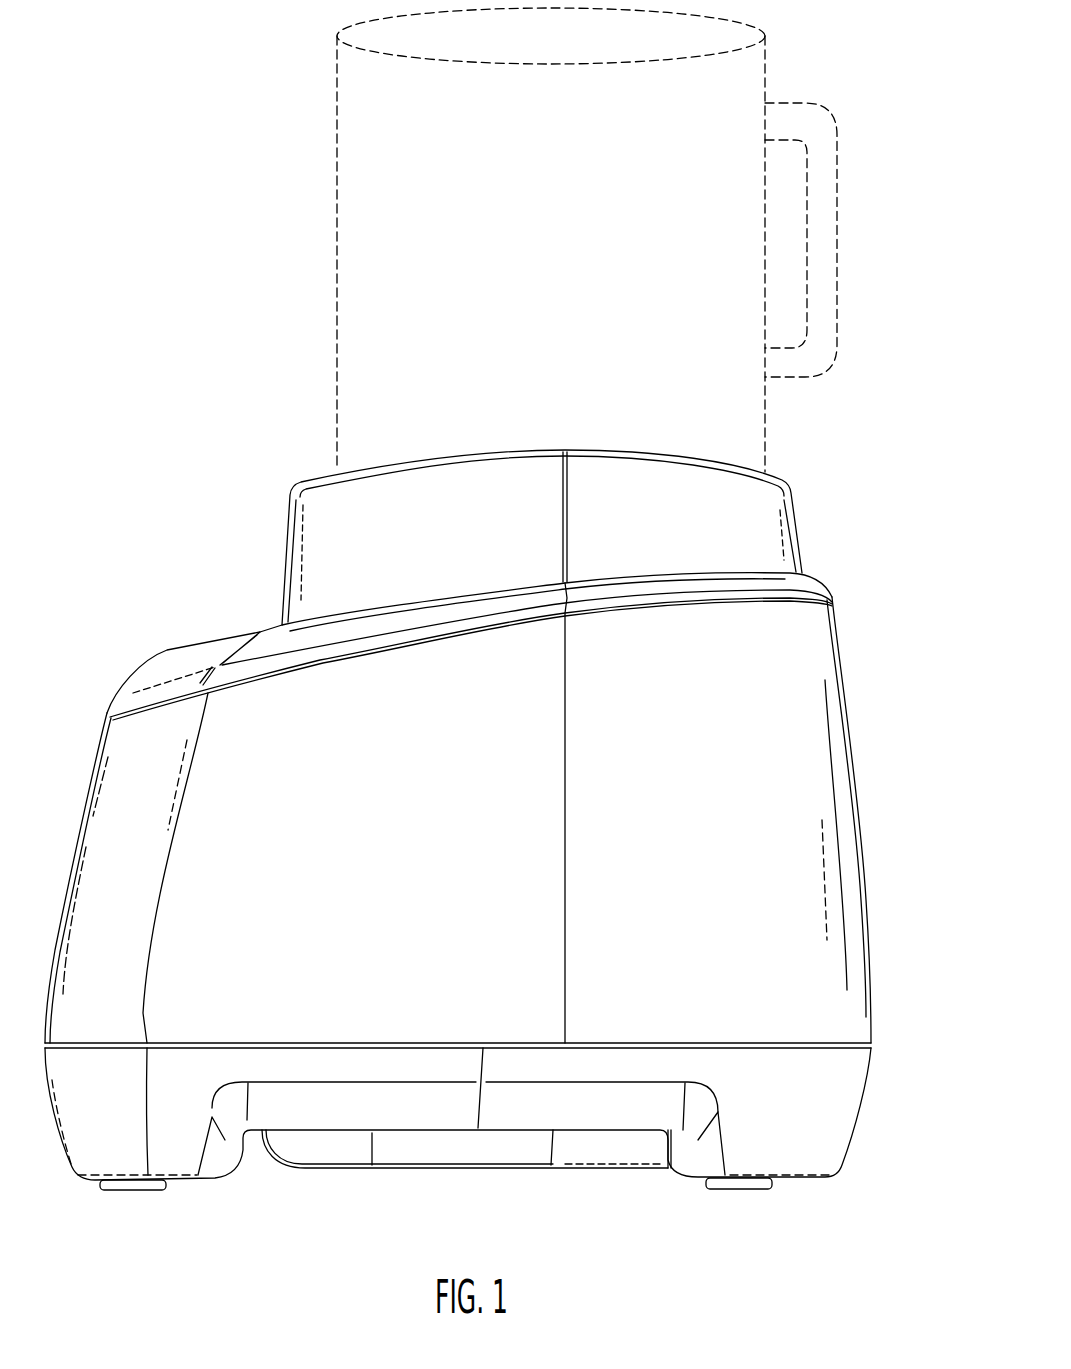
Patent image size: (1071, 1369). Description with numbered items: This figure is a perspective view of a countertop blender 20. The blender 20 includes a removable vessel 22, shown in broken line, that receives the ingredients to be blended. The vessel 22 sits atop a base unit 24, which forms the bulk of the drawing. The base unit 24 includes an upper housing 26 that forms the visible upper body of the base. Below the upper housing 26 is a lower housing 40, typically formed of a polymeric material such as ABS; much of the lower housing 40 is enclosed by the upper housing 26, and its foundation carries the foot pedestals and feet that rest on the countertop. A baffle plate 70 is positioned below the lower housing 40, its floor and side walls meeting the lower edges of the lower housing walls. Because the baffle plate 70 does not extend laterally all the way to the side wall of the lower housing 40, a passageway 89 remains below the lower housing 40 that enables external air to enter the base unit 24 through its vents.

The countertop blender 20 is at (875, 724).
The removable vessel 22 is at (765, 306).
The base unit 24 is at (879, 895).
The upper housing 26 is at (838, 1019).
The lower housing 40 is at (872, 1159).
The baffle plate 70 is at (645, 1203).
The passageway 89 is at (397, 1182).